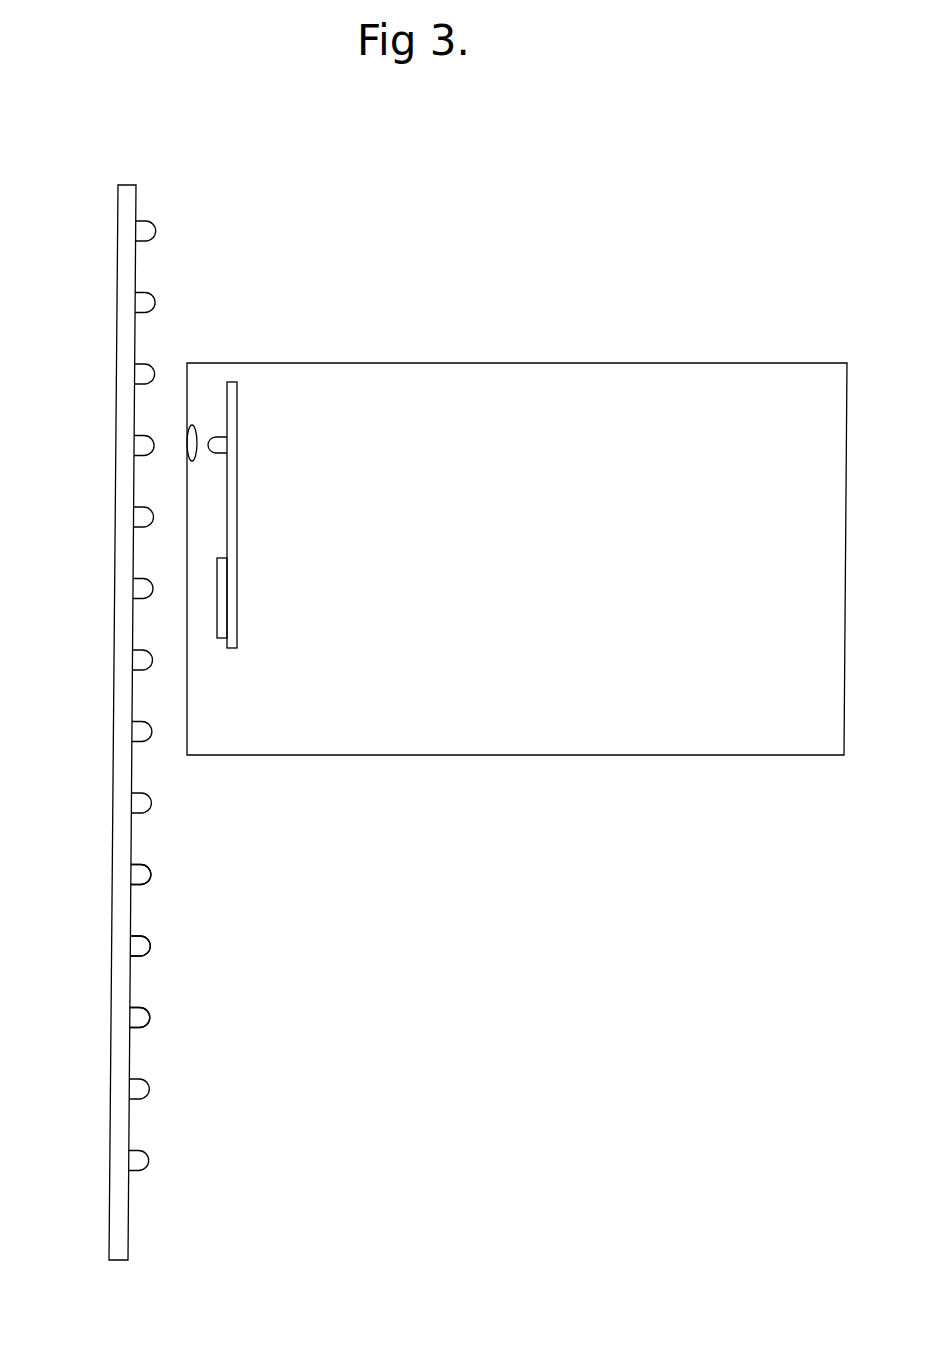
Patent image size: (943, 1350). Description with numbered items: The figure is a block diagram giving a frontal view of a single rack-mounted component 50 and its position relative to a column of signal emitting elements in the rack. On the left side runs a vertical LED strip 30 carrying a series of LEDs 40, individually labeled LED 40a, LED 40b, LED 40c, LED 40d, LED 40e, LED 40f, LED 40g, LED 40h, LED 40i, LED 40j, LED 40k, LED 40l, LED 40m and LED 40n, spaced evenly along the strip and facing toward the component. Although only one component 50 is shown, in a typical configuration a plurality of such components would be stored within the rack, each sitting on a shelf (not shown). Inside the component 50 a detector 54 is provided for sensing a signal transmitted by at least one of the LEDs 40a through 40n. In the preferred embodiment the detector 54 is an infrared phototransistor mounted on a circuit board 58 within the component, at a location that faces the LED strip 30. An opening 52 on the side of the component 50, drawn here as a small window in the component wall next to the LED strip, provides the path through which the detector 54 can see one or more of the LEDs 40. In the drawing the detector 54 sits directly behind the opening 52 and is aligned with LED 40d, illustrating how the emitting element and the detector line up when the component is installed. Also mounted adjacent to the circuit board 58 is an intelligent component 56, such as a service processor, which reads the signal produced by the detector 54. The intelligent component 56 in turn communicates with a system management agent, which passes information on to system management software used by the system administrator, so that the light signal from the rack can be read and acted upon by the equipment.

The LED strip 30 is at (135, 1223).
The LEDs 40 is at (160, 876).
The LED 40a is at (108, 231).
The LED 40b is at (107, 303).
The LED 40c is at (107, 374).
The LED 40d is at (107, 446).
The LED 40e is at (107, 517).
The LED 40f is at (106, 589).
The LED 40g is at (106, 660).
The LED 40h is at (106, 732).
The LED 40i is at (106, 803).
The LED 40j is at (106, 875).
The LED 40k is at (105, 946).
The LED 40l is at (106, 1018).
The LED 40m is at (103, 1089).
The LED 40n is at (104, 1161).
The rack-mounted component 50 is at (602, 355).
The opening 52 is at (207, 470).
The detector 54 is at (213, 424).
The intelligent component 56 is at (217, 642).
The circuit board 58 is at (248, 562).